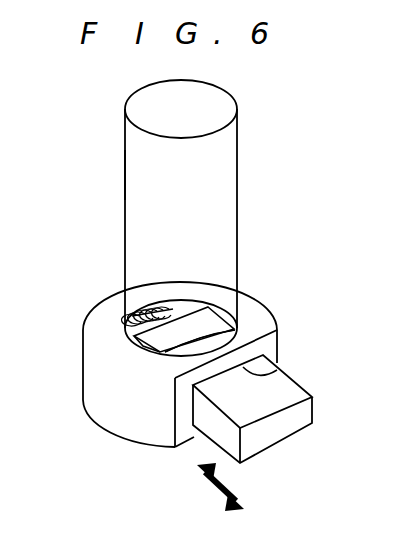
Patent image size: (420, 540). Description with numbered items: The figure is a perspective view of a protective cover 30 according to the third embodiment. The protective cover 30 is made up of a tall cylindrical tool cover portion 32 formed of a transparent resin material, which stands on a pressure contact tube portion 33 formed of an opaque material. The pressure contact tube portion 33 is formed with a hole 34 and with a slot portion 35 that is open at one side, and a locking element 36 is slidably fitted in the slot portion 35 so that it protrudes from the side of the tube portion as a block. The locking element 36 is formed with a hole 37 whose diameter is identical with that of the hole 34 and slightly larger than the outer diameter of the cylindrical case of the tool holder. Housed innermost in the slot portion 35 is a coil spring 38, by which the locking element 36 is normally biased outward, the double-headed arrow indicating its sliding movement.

The protective cover 30 is at (247, 167).
The tool cover portion 32 is at (128, 172).
The pressure contact tube portion 33 is at (248, 292).
The hole 34 is at (182, 307).
The slot portion 35 is at (280, 371).
The locking element 36 is at (303, 413).
The hole 37 is at (192, 343).
The coil spring 38 is at (143, 312).